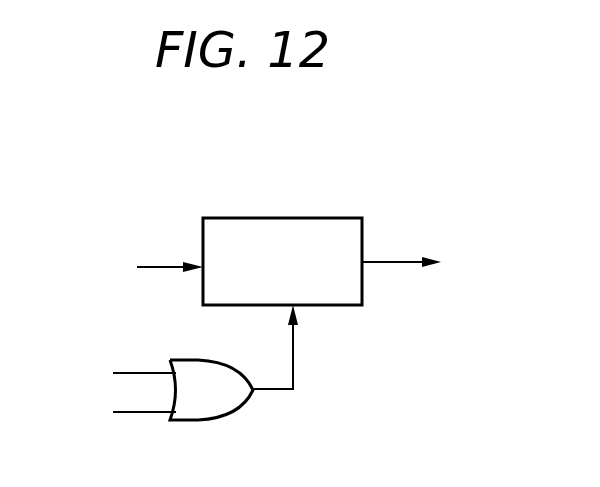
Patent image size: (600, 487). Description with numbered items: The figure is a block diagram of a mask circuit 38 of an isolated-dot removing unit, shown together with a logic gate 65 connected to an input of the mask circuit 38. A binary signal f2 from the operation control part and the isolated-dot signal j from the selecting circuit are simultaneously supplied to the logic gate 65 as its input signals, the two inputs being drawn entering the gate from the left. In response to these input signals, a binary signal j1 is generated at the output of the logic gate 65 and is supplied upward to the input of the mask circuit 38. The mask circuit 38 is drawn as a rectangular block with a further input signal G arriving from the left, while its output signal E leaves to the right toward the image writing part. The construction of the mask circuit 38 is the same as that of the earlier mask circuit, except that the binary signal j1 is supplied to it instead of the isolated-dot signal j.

The mask circuit 38 is at (266, 217).
The logic gate 65 is at (233, 413).
The input signal G is at (165, 252).
The output signal E is at (405, 246).
The binary signal f2 is at (125, 374).
The isolated-dot signal j is at (124, 416).
The binary signal j1 is at (289, 347).